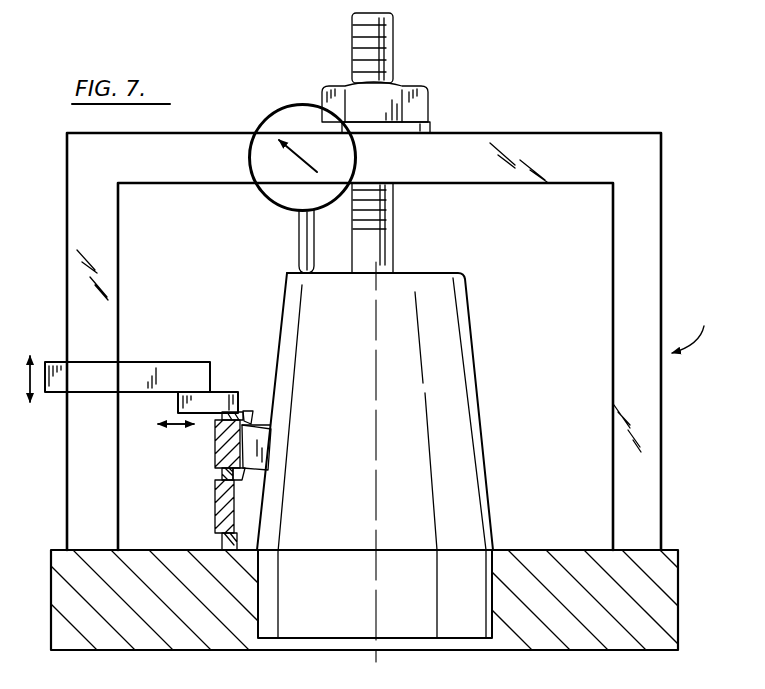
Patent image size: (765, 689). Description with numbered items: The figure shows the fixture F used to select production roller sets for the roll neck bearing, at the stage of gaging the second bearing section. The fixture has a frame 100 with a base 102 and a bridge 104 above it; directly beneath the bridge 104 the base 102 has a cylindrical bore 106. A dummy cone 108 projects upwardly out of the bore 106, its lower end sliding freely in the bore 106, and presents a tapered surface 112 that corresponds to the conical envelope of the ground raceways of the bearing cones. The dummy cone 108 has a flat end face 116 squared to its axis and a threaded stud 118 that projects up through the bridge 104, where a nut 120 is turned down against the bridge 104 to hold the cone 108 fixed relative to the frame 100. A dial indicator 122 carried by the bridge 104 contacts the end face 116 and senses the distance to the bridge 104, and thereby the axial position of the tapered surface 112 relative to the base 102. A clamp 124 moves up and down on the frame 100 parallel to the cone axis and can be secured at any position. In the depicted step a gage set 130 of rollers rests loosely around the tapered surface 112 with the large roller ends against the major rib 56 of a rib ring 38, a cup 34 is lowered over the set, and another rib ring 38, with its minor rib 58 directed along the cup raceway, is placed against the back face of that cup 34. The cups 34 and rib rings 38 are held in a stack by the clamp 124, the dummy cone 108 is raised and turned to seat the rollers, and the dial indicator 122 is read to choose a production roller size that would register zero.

The frame 100 is at (663, 241).
The base 102 is at (668, 574).
The bridge 104 is at (565, 138).
The cylindrical bore 106 is at (312, 640).
The dummy cone 108 is at (460, 433).
The tapered surface 112 is at (470, 349).
The flat end face 116 is at (446, 272).
The threaded stud 118 is at (394, 47).
The nut 120 is at (427, 107).
The dial indicator 122 is at (272, 123).
The clamp 124 is at (140, 365).
The gage set 130 is at (262, 455).
The cup 34 is at (220, 440).
The rib ring 38 is at (250, 420).
The major rib 56 is at (250, 428).
The minor rib 58 is at (247, 411).